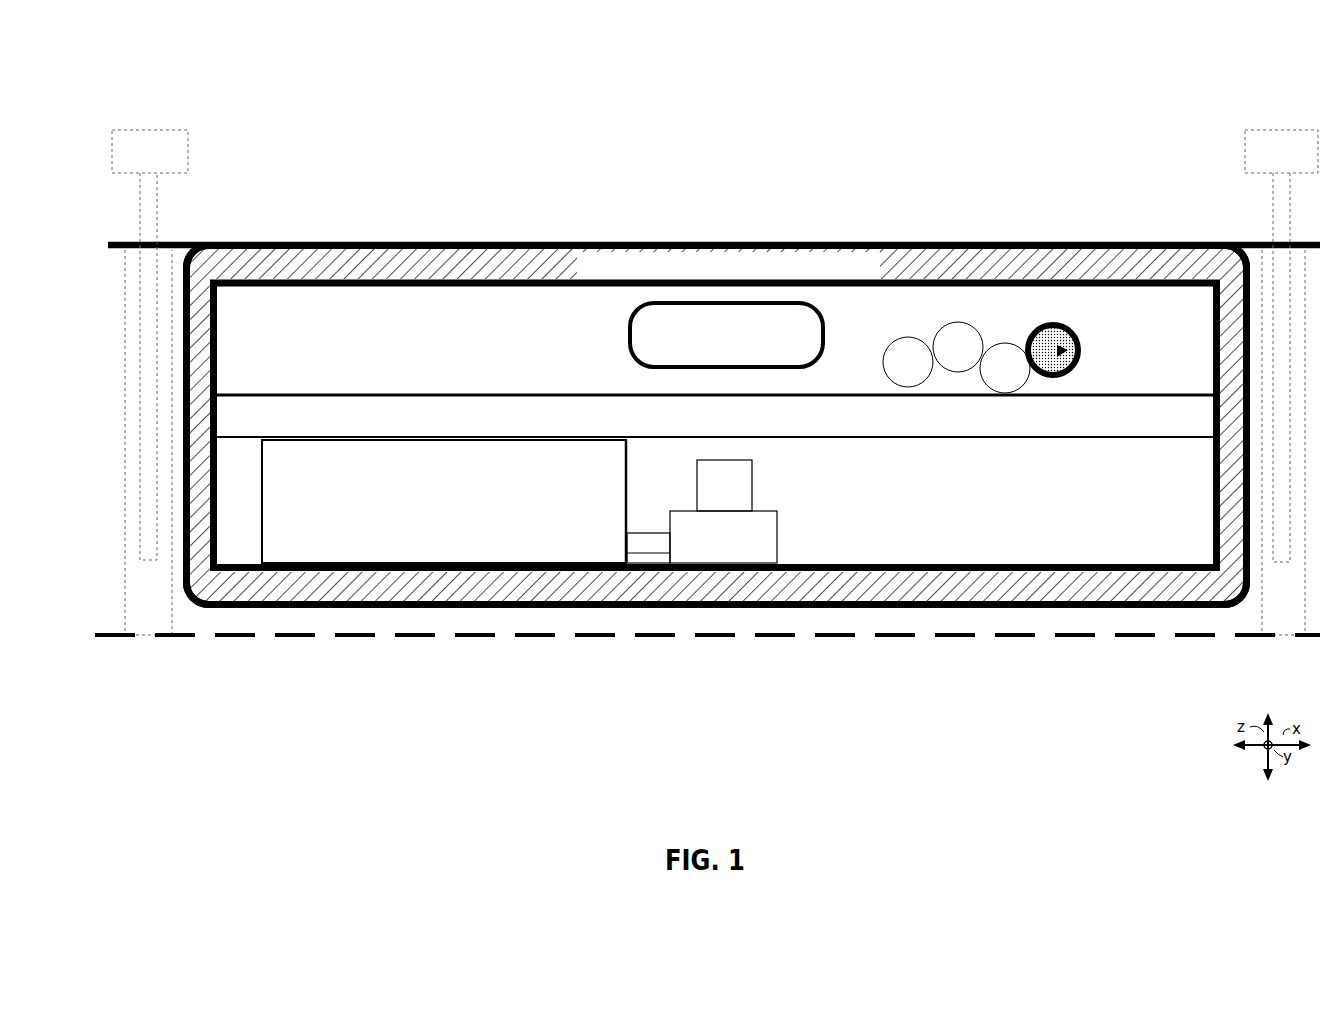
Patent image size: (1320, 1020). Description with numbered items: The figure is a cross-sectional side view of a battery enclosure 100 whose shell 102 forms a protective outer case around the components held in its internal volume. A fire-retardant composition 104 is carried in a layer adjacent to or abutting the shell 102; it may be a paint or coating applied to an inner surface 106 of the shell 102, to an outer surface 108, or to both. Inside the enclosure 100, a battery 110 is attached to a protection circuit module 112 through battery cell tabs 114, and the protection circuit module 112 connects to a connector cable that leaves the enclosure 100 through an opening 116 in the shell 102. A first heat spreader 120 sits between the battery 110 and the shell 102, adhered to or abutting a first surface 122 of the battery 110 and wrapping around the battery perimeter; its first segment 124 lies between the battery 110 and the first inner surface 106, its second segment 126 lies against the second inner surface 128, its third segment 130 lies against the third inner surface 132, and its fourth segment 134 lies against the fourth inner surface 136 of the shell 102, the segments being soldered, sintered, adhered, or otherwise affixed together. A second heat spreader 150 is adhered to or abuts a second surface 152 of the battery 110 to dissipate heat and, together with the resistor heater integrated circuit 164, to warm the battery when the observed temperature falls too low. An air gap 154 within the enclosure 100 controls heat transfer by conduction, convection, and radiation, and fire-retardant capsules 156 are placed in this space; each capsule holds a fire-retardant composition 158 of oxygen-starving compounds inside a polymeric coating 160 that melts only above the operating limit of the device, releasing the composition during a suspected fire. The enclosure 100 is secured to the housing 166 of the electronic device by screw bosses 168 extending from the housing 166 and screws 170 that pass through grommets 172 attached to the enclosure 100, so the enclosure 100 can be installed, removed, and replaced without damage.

The battery enclosure 100 is at (1037, 66).
The shell 102 is at (440, 242).
The fire-retardant composition 104 is at (617, 275).
The first inner surface 106 is at (976, 590).
The outer surface 108 is at (1003, 242).
The battery 110 is at (423, 510).
The protection circuit module 112 is at (741, 548).
The battery cell tab 114 is at (661, 551).
The opening 116 is at (700, 346).
The first heat spreader 120 is at (883, 563).
The first surface 122 is at (588, 562).
The first segment 124 is at (1035, 563).
The second segment 126 is at (493, 283).
The second inner surface 128 is at (296, 257).
The third segment 130 is at (218, 360).
The third inner surface 132 is at (217, 335).
The fourth segment 134 is at (1212, 520).
The fourth inner surface 136 is at (1212, 460).
The second heat spreader 150 is at (658, 426).
The second surface 152 is at (590, 440).
The air gap 154 is at (505, 370).
The fire-retardant capsule 156 is at (919, 368).
The fire-retardant composition 158 is at (1079, 347).
The coating 160 is at (1061, 322).
The resistor heater integrated circuit 164 is at (742, 495).
The housing 166 is at (405, 640).
The screw boss 168 is at (166, 593).
The screw 170 is at (165, 163).
The grommet 172 is at (1262, 244).